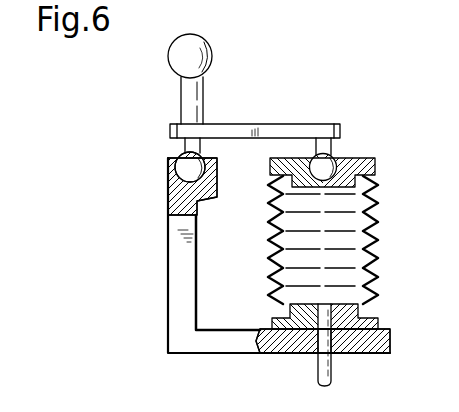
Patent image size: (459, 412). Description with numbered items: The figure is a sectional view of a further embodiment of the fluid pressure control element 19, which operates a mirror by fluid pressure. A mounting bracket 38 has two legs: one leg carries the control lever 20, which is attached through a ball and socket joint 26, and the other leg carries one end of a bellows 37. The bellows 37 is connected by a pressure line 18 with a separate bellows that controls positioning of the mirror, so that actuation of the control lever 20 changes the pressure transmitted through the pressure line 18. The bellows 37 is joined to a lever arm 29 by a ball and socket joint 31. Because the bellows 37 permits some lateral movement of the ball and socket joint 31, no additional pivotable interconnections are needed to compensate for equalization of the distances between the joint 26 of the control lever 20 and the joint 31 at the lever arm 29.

The pressure line 18 is at (332, 372).
The fluid pressure control element 19 is at (327, 100).
The control lever 20 is at (203, 62).
The ball and socket joint 26 is at (184, 172).
The lever arm 29 is at (266, 125).
The ball and socket joint 31 is at (330, 167).
The bellows 37 is at (380, 243).
The mounting bracket 38 is at (174, 297).